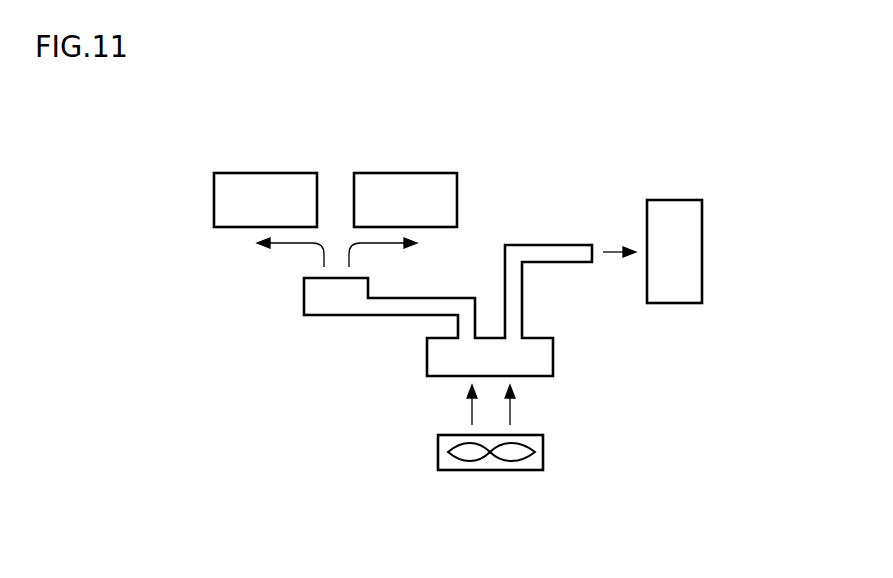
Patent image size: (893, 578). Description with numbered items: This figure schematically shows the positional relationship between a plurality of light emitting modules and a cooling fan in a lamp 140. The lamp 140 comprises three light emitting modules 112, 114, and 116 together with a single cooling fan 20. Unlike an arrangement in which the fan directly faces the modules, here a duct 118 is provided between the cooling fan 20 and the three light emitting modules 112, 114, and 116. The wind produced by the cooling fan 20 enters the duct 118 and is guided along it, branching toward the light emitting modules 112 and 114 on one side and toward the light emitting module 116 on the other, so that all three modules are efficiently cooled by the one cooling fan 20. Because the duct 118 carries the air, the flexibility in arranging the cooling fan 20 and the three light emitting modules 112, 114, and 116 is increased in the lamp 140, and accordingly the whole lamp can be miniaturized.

The light emitting module 112 is at (266, 172).
The light emitting module 114 is at (405, 172).
The light emitting module 116 is at (703, 240).
The duct 118 is at (322, 317).
The cooling fan 20 is at (544, 452).
The lamp 140 is at (516, 543).